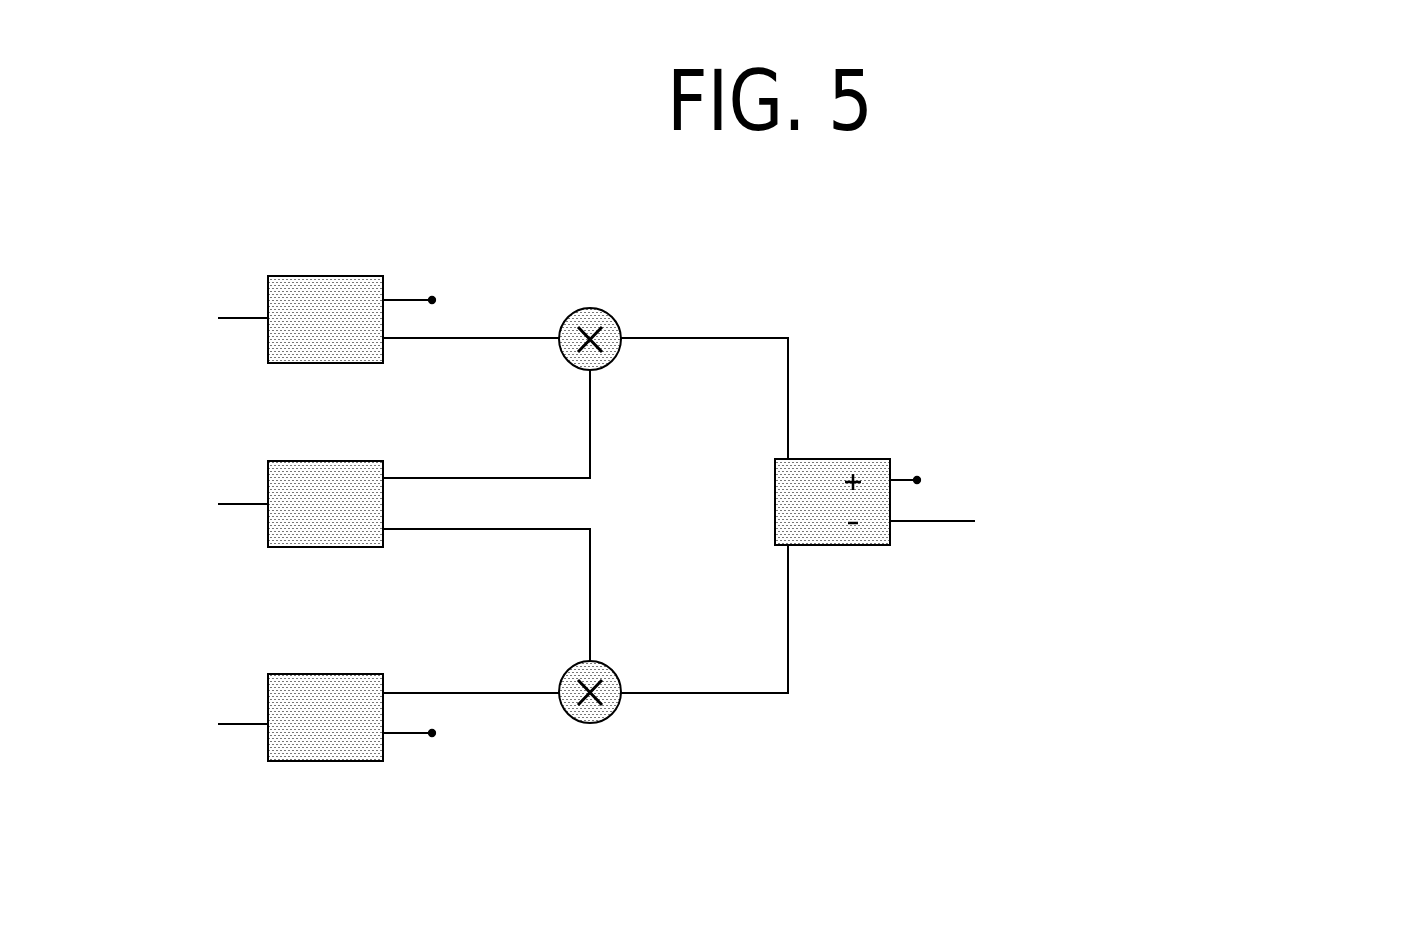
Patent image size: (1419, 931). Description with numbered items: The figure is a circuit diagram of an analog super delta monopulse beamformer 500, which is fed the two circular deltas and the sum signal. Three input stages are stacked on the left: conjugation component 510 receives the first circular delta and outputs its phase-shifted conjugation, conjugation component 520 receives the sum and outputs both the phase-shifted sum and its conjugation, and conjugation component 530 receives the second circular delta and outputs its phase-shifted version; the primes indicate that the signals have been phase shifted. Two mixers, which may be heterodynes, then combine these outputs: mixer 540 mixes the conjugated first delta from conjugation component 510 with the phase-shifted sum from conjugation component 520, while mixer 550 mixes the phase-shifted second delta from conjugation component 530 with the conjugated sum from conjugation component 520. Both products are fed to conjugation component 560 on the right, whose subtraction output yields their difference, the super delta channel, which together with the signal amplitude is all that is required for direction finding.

The analog super delta monopulse beamformer 500 is at (247, 172).
The conjugation component 510 is at (339, 272).
The conjugation component 520 is at (370, 460).
The conjugation component 530 is at (338, 672).
The mixer 540 is at (592, 308).
The mixer 550 is at (609, 665).
The conjugation component 560 is at (825, 455).